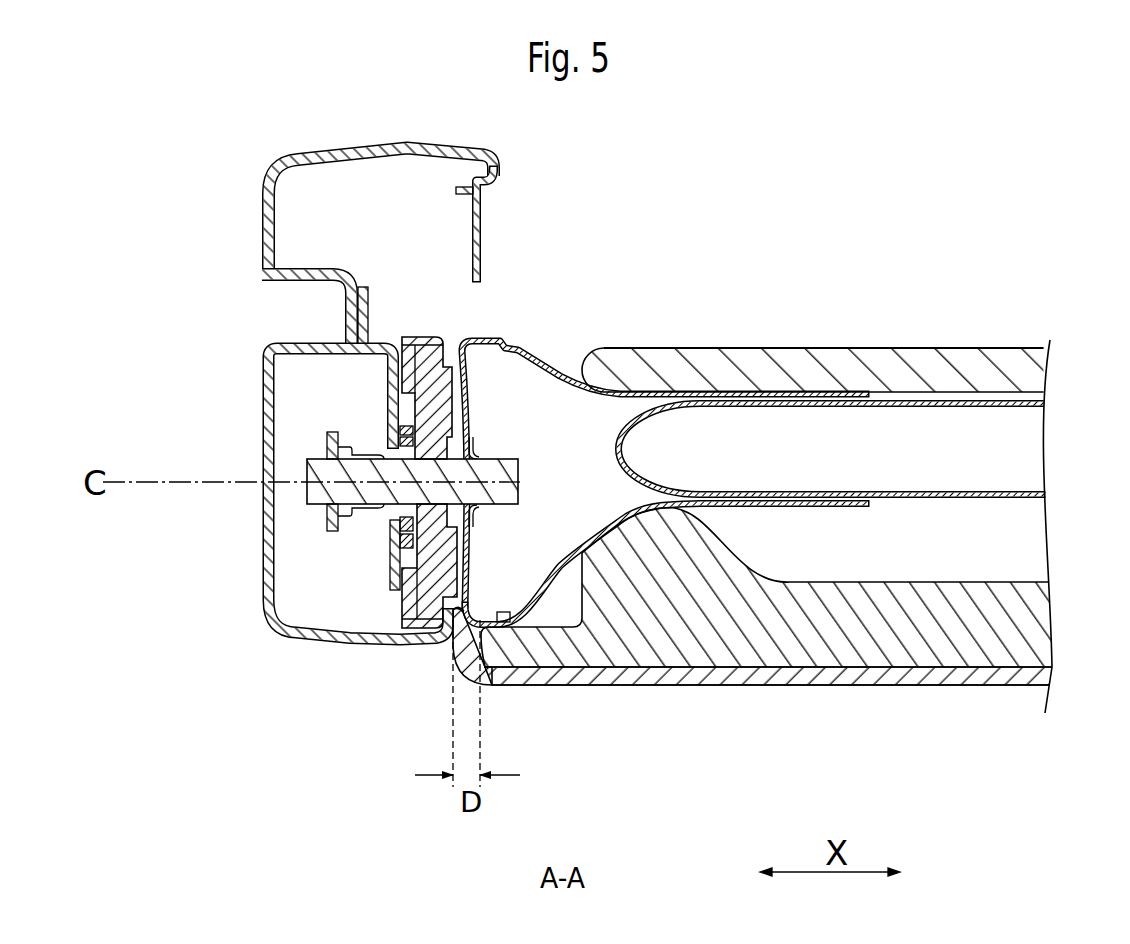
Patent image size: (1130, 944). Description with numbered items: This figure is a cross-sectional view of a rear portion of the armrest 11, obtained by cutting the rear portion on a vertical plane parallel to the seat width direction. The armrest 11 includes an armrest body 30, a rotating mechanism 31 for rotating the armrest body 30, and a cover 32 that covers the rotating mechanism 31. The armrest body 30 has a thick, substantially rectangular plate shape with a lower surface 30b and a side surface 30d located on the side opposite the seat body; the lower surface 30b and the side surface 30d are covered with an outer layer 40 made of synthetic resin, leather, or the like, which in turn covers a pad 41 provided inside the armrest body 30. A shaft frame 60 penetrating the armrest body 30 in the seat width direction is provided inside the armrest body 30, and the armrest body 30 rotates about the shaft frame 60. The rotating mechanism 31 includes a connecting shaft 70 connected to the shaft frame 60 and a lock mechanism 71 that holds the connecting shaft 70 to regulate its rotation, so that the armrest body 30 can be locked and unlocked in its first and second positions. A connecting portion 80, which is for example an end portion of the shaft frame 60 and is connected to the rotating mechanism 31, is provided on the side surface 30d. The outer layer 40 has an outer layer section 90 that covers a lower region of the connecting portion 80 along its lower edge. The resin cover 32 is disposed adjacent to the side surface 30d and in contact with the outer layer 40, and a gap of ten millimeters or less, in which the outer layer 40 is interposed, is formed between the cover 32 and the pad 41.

The armrest 11 is at (742, 230).
The armrest body 30 is at (668, 346).
The lower surface 30b is at (704, 688).
The side surface 30d is at (440, 648).
The rotating mechanism 31 is at (285, 402).
The cover 32 is at (262, 356).
The outer layer 40 is at (771, 688).
The pad 41 is at (866, 362).
The shaft frame 60 is at (545, 358).
The connecting shaft 70 is at (330, 508).
The lock mechanism 71 is at (377, 547).
The connecting portion 80 is at (441, 365).
The outer layer section 90 is at (455, 640).